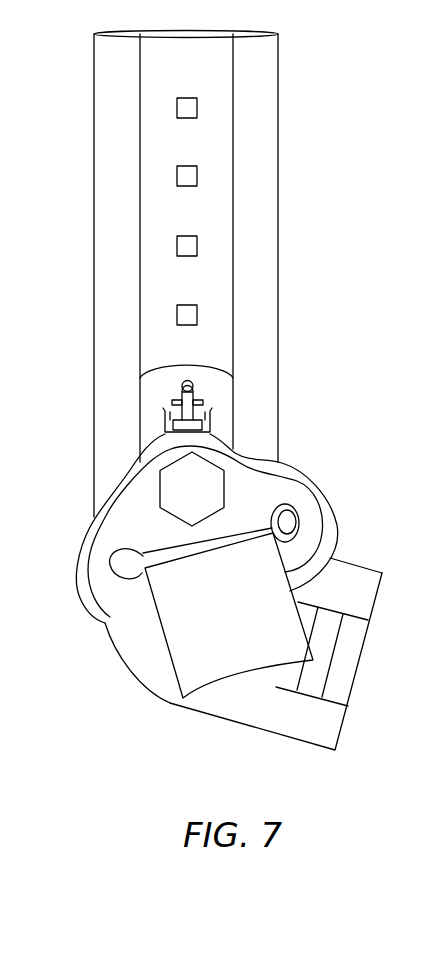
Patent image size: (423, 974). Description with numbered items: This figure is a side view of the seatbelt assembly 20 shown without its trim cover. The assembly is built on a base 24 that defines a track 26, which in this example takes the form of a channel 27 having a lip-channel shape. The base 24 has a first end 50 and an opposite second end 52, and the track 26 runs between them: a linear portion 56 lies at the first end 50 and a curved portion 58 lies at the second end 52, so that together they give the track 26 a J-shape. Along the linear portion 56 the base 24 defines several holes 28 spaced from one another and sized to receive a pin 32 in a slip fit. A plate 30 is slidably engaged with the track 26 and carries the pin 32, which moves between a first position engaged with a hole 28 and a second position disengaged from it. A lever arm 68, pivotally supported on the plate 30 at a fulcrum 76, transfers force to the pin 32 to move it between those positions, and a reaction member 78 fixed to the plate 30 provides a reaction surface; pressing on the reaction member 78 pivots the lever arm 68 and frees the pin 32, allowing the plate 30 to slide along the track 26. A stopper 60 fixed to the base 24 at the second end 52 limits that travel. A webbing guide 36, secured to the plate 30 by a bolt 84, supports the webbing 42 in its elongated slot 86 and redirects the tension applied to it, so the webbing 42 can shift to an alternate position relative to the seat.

The seatbelt assembly 20 is at (354, 337).
The base 24 is at (108, 212).
The track 26 is at (160, 292).
The channel 27 is at (158, 148).
The hole 28 is at (200, 108).
The plate 30 is at (218, 390).
The pin 32 is at (182, 385).
The webbing guide 36 is at (87, 582).
The webbing 42 is at (193, 655).
The first end 50 is at (108, 93).
The second end 52 is at (292, 712).
The linear portion 56 is at (262, 82).
The curved portion 58 is at (135, 650).
The stopper 60 is at (327, 640).
The lever arm 68 is at (174, 402).
The fulcrum 76 is at (197, 383).
The reaction member 78 is at (215, 427).
The bolt 84 is at (176, 490).
The slot 86 is at (285, 523).